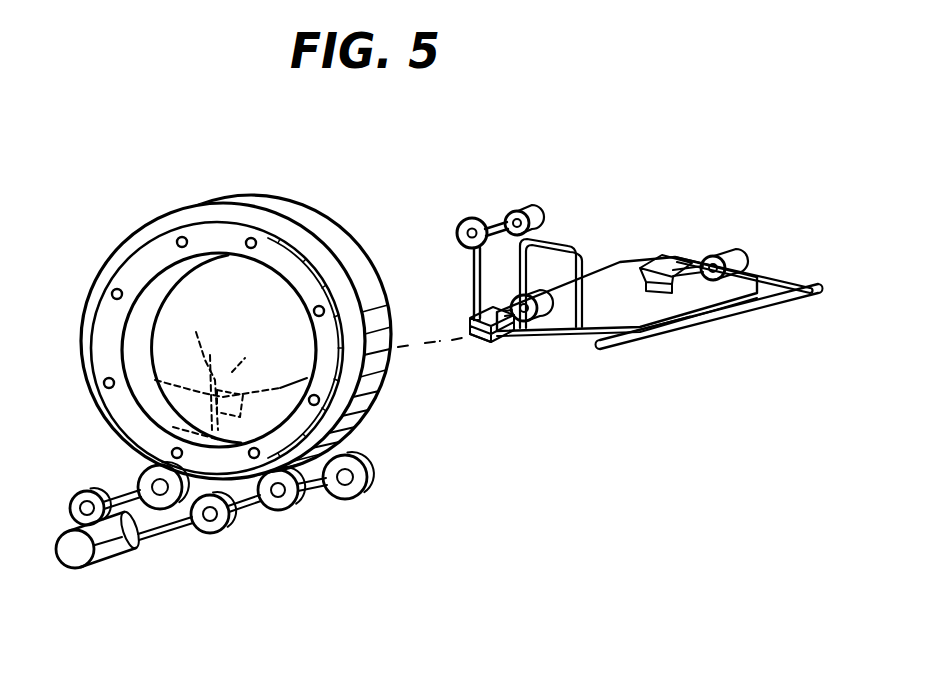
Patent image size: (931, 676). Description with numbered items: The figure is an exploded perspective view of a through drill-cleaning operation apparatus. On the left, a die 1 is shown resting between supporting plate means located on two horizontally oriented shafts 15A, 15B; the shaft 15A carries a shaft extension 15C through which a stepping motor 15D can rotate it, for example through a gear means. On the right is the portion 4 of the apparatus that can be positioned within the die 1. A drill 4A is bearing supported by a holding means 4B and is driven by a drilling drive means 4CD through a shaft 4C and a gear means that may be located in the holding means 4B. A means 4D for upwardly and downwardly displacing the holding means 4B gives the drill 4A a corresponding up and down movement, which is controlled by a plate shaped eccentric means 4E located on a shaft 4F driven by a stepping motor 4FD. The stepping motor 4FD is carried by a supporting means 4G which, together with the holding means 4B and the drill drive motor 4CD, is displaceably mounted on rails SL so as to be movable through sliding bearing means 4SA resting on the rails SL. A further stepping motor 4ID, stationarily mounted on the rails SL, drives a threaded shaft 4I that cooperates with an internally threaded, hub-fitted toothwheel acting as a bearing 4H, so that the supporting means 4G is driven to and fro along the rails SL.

The die 1 is at (372, 442).
The portion of the apparatus 4 is at (503, 340).
The drill 4A is at (492, 340).
The holding means 4B is at (485, 338).
The shaft 4C is at (512, 325).
The drilling drive means 4CD is at (550, 330).
The means for upwardly and downwardly displacing the holding means 4D is at (473, 277).
The plate shaped eccentric means 4E is at (467, 221).
The shaft 4F is at (493, 224).
The stepping motor 4FD is at (519, 210).
The supporting means 4G is at (585, 247).
The bearing 4H is at (660, 255).
The threaded shaft 4I is at (688, 263).
The stepping motor 4ID is at (726, 252).
The sliding bearing means 4SA is at (715, 312).
The rails SL is at (635, 259).
The shaft 15A is at (252, 512).
The shaft 15B is at (122, 490).
The shaft extension 15C is at (170, 530).
The stepping motor 15D is at (100, 563).